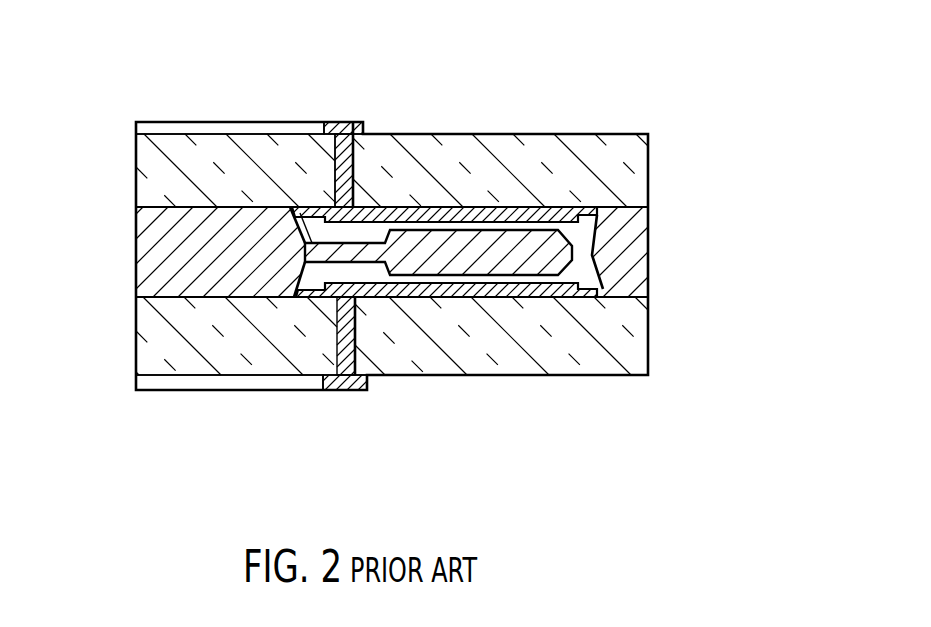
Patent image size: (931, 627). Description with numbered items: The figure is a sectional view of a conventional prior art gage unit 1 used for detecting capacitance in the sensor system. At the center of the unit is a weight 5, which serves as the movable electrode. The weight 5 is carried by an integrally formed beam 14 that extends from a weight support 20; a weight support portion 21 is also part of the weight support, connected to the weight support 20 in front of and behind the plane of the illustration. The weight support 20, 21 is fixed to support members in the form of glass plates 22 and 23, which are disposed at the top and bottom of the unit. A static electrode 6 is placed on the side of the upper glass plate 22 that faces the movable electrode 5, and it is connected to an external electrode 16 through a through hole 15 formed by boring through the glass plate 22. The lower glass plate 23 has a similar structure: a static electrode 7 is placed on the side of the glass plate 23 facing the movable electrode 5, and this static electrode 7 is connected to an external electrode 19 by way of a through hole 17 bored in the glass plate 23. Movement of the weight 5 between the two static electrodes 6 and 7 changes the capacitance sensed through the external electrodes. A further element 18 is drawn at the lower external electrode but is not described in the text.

The gage unit 1 is at (669, 80).
The weight 5 is at (543, 243).
The static electrode 6 is at (500, 210).
The static electrode 7 is at (527, 300).
The beam 14 is at (289, 207).
The through hole 15 is at (346, 188).
The external electrode 16 is at (352, 122).
The through hole 17 is at (156, 122).
The lower external terminal 18 is at (343, 391).
The external electrode 19 is at (163, 391).
The weight support 20 is at (138, 255).
The weight support portion 21 is at (650, 250).
The glass plate 22 is at (650, 166).
The glass plate 23 is at (650, 333).